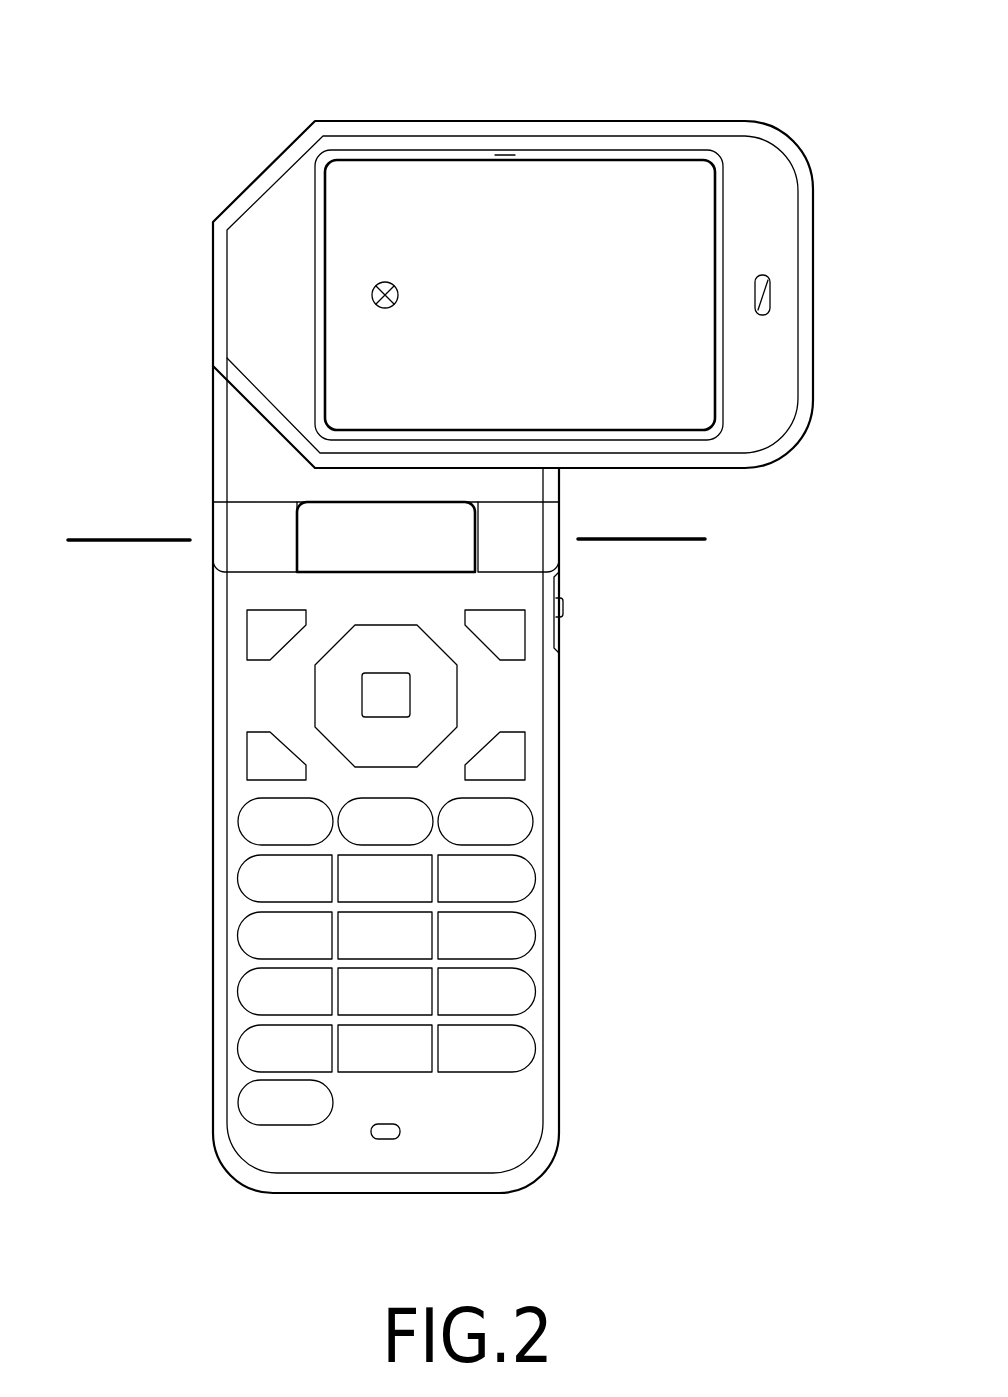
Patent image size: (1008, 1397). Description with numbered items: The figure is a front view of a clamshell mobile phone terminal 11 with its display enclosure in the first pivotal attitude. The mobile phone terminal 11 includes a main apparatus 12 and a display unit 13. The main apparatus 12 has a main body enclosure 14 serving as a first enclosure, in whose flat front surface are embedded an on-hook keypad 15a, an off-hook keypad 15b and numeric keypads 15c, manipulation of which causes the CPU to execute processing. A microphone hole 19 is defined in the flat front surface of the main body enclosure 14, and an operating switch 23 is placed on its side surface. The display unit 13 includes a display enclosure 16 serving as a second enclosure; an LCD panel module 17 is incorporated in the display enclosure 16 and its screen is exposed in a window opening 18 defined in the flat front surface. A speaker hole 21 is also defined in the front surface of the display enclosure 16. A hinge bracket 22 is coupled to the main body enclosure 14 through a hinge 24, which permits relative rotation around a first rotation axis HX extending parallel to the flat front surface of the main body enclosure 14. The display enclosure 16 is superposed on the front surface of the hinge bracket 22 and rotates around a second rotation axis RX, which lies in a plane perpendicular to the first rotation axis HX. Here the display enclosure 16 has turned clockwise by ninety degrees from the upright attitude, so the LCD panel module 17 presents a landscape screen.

The mobile phone terminal 11 is at (220, 105).
The main apparatus 12 is at (213, 718).
The display unit 13 is at (218, 217).
The main body enclosure 14 is at (560, 1047).
The on-hook keypad 15a is at (250, 823).
The off-hook keypad 15b is at (515, 822).
The numeric keypads 15c is at (255, 935).
The display enclosure 16 is at (768, 125).
The LCD panel module 17 is at (568, 173).
The window opening 18 is at (520, 160).
The microphone hole 19 is at (375, 1135).
The speaker hole 21 is at (762, 300).
The hinge bracket 22 is at (213, 430).
The operating switch 23 is at (563, 607).
The hinge 24 is at (297, 538).
The second rotation axis RX is at (394, 286).
The first rotation axis HX is at (653, 537).